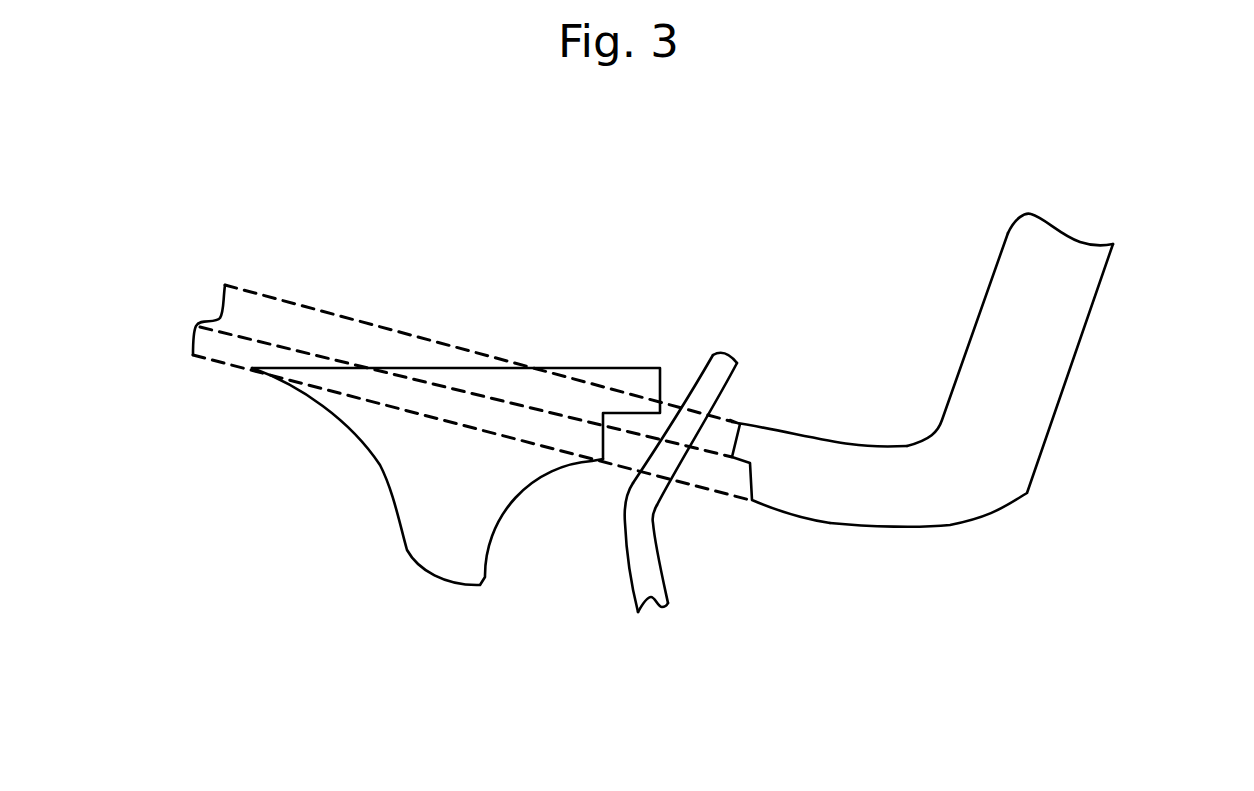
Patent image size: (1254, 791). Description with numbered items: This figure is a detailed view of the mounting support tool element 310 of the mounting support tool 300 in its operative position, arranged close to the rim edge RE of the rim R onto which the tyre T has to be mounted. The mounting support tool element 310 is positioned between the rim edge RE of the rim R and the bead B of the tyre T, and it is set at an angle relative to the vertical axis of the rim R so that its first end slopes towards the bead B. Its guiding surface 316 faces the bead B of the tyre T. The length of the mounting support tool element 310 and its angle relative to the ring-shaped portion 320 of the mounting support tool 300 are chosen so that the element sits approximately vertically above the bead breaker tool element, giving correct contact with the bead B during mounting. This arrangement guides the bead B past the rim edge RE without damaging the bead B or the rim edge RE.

The mounting support tool 300 is at (892, 173).
The mounting support tool element 310 is at (728, 338).
The guiding surface 316 is at (717, 376).
The ring-shaped portion 320 is at (670, 627).
The rim R is at (410, 448).
The rim edge RE is at (610, 377).
The bead B is at (787, 447).
The tyre T is at (1047, 388).